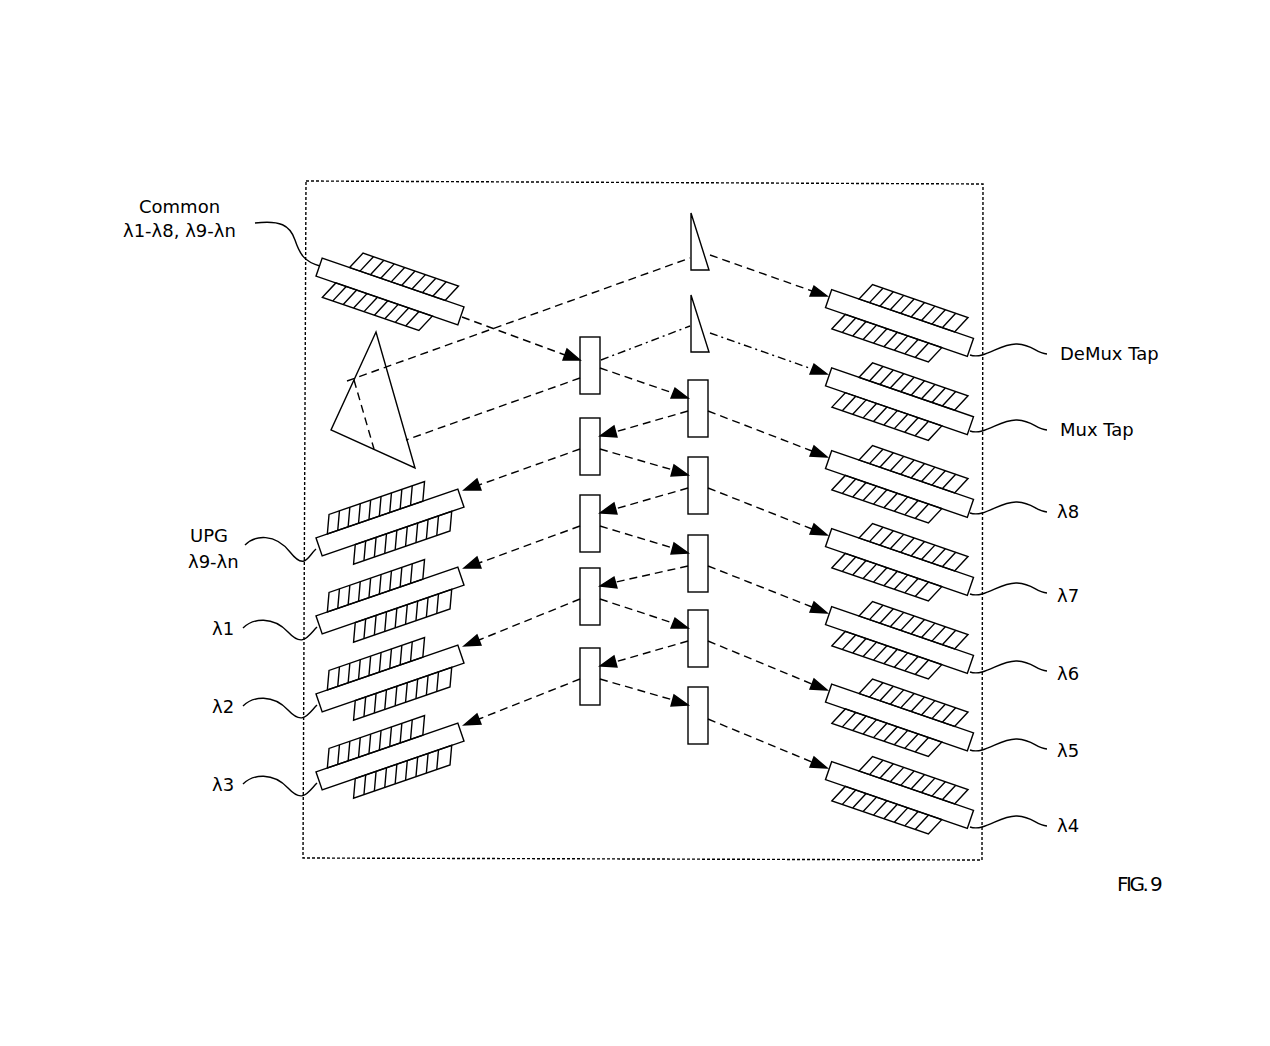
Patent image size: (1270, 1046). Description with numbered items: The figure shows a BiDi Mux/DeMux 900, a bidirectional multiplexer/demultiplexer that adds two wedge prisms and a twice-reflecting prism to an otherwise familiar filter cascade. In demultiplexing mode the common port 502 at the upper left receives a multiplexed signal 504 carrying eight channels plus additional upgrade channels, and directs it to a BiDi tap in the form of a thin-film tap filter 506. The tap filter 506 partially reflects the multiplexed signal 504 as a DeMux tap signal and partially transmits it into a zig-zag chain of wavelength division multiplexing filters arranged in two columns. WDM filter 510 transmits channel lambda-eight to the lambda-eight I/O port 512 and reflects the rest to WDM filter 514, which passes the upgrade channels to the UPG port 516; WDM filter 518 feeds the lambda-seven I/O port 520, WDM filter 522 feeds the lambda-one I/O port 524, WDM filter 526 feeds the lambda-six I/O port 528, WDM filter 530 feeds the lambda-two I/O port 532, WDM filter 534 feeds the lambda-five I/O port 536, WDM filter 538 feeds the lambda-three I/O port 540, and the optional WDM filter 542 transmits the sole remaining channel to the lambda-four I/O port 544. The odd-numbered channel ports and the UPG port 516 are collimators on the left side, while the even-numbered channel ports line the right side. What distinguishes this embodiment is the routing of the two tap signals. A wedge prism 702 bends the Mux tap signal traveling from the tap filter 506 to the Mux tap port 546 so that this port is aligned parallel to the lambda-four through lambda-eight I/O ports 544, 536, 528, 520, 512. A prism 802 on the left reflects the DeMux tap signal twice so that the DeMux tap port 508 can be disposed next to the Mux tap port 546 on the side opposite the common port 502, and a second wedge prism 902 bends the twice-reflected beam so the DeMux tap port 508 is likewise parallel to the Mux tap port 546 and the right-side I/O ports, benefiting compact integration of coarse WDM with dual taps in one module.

The BiDi Mux/DeMux 900 is at (382, 138).
The common port 502 is at (430, 272).
The prism 802 is at (402, 418).
The wedge prism 902 is at (700, 233).
The wedge prism 702 is at (700, 315).
The multiplexed signal 504 is at (547, 348).
The thin-film tap filter 506 is at (597, 335).
The WDM filter 510 is at (709, 401).
The WDM filter 514 is at (579, 441).
The WDM filter 518 is at (709, 478).
The WDM filter 522 is at (579, 520).
The WDM filter 526 is at (709, 557).
The WDM filter 530 is at (579, 600).
The WDM filter 534 is at (709, 633).
The WDM filter 538 is at (579, 682).
The WDM filter 542 is at (709, 705).
The UPG port 516 is at (452, 485).
The λ1 I/O port 524 is at (452, 563).
The λ2 I/O port 532 is at (452, 640).
The λ3 I/O port 540 is at (452, 719).
The DeMux tap port 508 is at (890, 284).
The Mux tap port 546 is at (833, 350).
The λ8 I/O port 512 is at (832, 433).
The λ7 I/O port 520 is at (832, 513).
The λ6 I/O port 528 is at (832, 588).
The λ5 I/O port 536 is at (832, 665).
The λ4 I/O port 544 is at (818, 766).